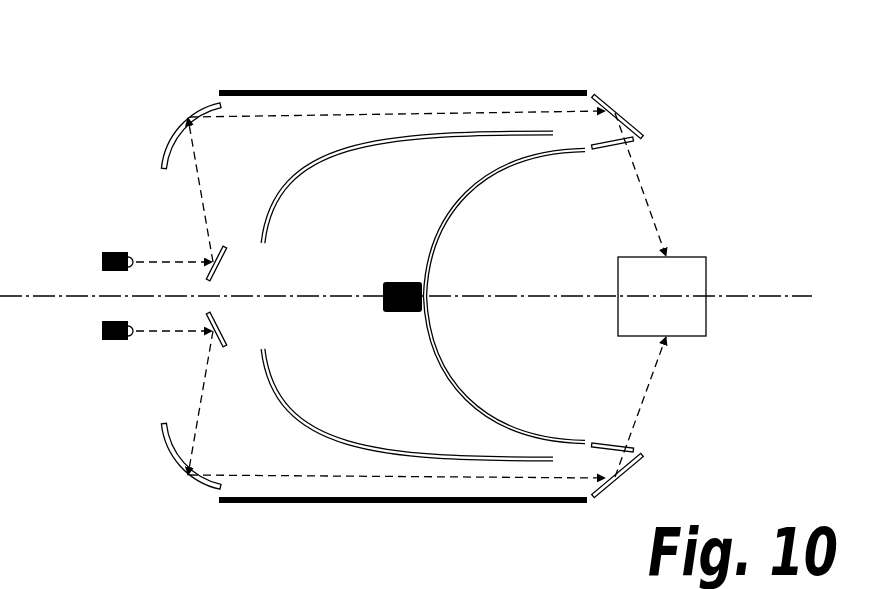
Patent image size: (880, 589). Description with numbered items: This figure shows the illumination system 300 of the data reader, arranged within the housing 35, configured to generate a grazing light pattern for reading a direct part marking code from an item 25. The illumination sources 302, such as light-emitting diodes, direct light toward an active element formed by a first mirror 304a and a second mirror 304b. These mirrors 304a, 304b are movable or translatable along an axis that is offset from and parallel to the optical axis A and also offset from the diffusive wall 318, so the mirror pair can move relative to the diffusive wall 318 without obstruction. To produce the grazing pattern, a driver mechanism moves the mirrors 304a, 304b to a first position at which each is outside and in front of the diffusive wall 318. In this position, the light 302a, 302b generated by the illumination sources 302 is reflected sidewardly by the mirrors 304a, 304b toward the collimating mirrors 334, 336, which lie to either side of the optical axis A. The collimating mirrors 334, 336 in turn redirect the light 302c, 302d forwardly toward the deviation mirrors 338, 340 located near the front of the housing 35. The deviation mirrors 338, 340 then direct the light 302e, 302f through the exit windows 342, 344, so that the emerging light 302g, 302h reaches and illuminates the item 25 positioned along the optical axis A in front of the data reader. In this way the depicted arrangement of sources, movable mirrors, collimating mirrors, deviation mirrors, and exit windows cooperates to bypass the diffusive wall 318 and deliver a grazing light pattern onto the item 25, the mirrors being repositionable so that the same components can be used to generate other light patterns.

The illumination system 300 is at (111, 150).
The illumination sources 302 is at (110, 250).
The light 302a is at (178, 262).
The light 302b is at (178, 331).
The light 302c is at (201, 183).
The light 302d is at (203, 408).
The light 302e is at (251, 119).
The light 302f is at (270, 475).
The light 302g is at (641, 187).
The light 302h is at (650, 372).
The first mirror 304a is at (224, 254).
The second mirror 304b is at (222, 314).
The diffusive wall 318 is at (374, 152).
The collimating mirror 334 is at (190, 104).
The collimating mirror 336 is at (193, 488).
The deviation mirror 338 is at (626, 117).
The deviation mirror 340 is at (640, 466).
The exit window 342 is at (609, 148).
The exit window 344 is at (607, 444).
The housing 35 is at (437, 89).
The item 25 is at (690, 257).
The optical axis A is at (577, 296).